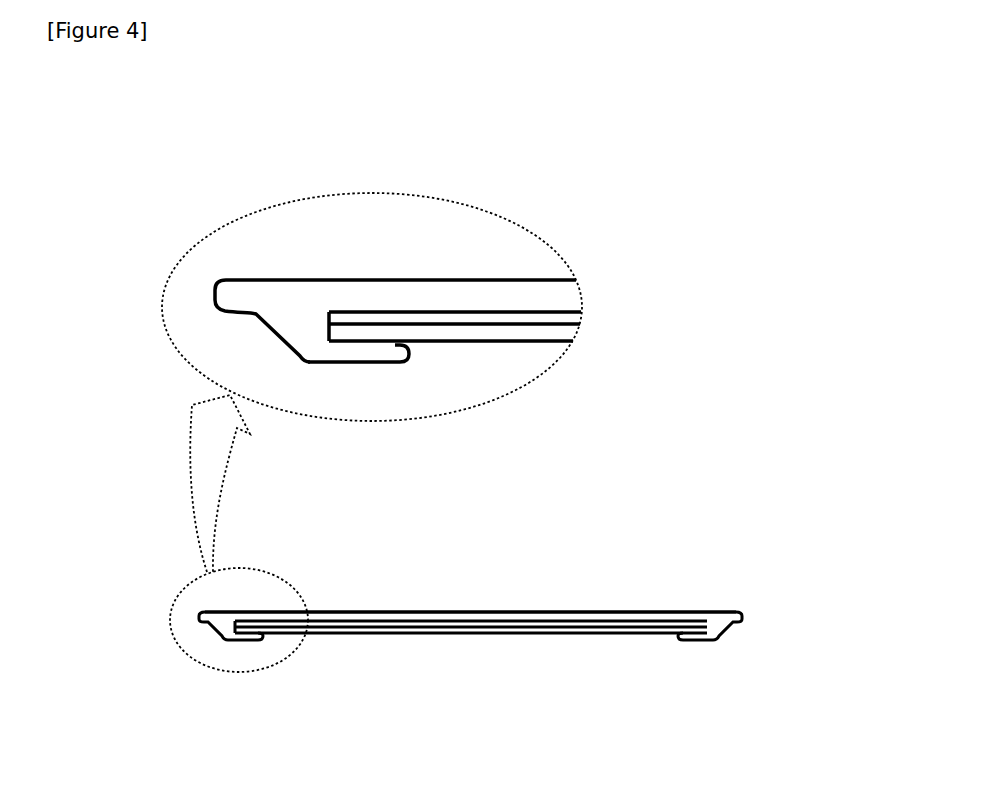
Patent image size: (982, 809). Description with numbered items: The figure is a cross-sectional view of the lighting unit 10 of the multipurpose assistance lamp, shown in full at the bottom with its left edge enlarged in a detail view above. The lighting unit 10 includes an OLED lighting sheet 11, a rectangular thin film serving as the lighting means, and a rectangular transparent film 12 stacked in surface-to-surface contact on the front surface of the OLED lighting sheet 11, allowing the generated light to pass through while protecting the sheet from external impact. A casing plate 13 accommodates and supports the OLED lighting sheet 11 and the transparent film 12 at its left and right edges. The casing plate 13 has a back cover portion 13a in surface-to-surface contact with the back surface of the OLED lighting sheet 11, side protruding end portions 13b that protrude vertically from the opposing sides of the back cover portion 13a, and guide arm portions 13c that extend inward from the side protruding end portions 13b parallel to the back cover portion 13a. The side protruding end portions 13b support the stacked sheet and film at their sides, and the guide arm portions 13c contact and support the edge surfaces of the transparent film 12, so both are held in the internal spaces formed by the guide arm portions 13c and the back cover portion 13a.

The lighting unit 10 is at (605, 548).
The OLED lighting sheet 11 is at (457, 318).
The transparent film 12 is at (503, 332).
The casing plate 13 is at (352, 280).
The back cover portion 13a is at (440, 290).
The side protruding end portion 13b is at (290, 320).
The guide arm portion 13c is at (362, 363).